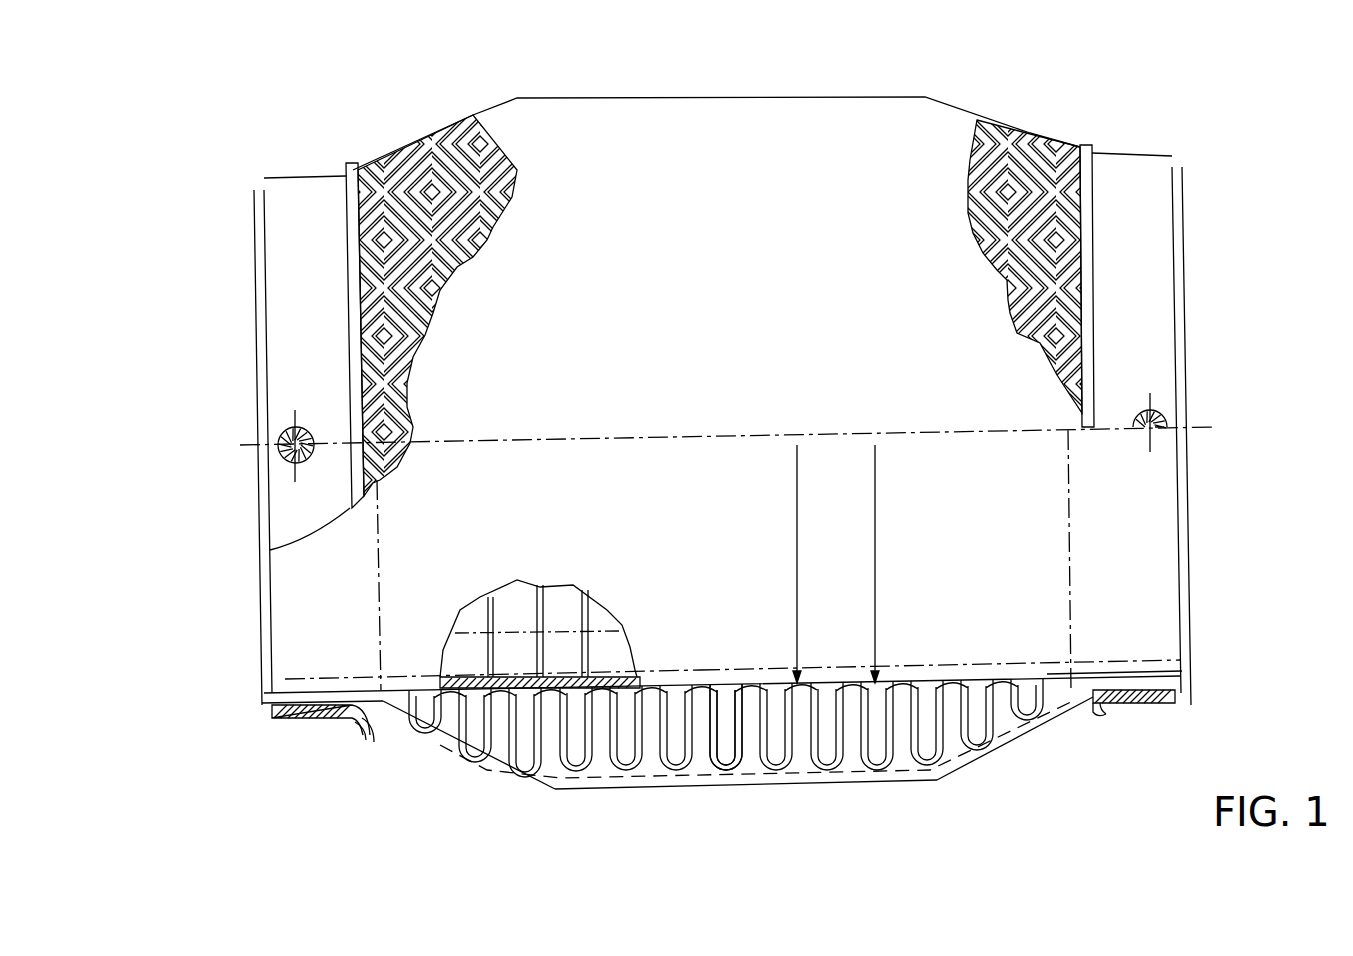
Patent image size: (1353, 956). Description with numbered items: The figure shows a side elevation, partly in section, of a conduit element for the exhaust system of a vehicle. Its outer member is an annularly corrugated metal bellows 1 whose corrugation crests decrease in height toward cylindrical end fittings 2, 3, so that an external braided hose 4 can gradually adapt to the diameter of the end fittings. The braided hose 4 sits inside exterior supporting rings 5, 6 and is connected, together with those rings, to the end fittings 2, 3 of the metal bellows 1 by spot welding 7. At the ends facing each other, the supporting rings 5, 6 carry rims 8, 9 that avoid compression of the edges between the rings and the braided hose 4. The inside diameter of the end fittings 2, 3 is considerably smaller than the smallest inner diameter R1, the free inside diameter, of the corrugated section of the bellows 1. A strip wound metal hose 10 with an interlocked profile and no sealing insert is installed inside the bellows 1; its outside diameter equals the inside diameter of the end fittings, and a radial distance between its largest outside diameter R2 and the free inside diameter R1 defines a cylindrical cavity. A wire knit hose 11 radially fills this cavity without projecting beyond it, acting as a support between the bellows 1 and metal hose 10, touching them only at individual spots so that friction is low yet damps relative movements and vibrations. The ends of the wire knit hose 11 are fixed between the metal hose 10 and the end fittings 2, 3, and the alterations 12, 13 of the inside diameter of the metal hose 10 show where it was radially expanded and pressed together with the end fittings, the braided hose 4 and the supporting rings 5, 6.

The metal bellows 1 is at (853, 760).
The cylindrical end fitting 2 is at (385, 700).
The cylindrical end fitting 3 is at (1080, 697).
The braided hose 4 is at (1033, 135).
The supporting ring 5 is at (275, 722).
The supporting ring 6 is at (1165, 703).
The spot welding 7 is at (290, 446).
The rim 8 is at (358, 728).
The rim 9 is at (1093, 715).
The strip wound metal hose 10 is at (510, 647).
The wire knit hose 11 is at (727, 757).
The alteration of inside diameter 12 is at (318, 685).
The alteration of inside diameter 13 is at (1123, 660).
The smallest inner diameter of the corrugated section R1 is at (797, 491).
The largest outside diameter of the metal hose R2 is at (875, 478).